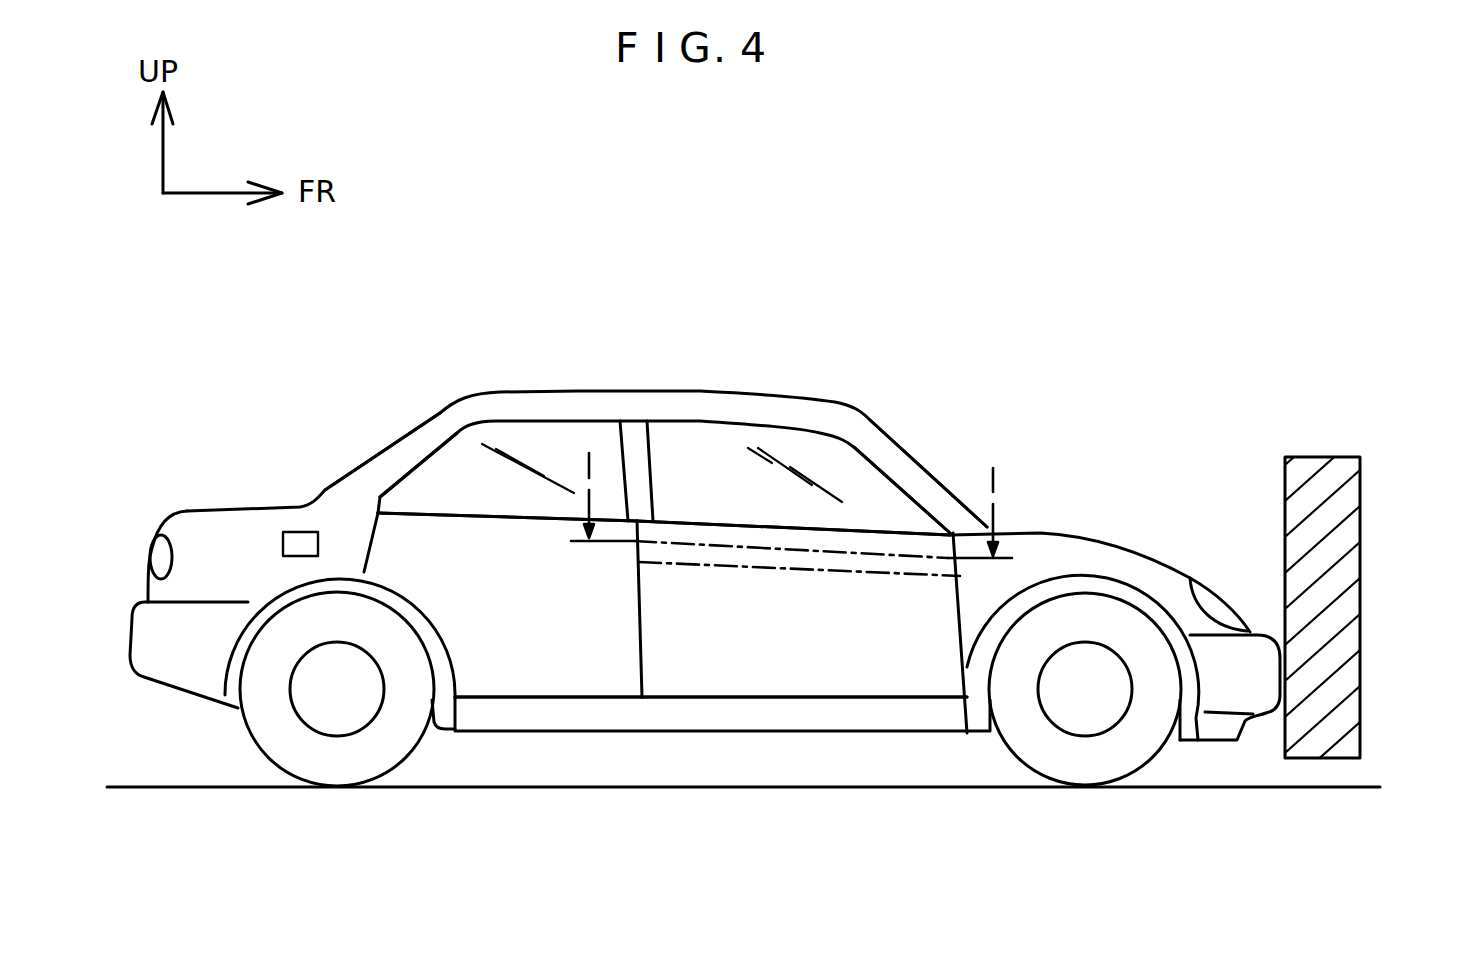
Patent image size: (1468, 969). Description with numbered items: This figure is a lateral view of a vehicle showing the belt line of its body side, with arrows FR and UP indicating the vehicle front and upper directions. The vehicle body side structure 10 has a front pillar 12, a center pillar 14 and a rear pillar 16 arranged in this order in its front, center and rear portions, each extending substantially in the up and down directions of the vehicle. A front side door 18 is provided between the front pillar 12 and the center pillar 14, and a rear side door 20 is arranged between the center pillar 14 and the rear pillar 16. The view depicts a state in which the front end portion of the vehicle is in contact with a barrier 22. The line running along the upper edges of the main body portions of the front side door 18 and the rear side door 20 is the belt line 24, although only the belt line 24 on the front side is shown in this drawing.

The vehicle body side structure 10 is at (721, 670).
The front pillar 12 is at (913, 473).
The center pillar 14 is at (644, 465).
The rear pillar 16 is at (402, 452).
The front side door 18 is at (787, 673).
The rear side door 20 is at (553, 677).
The barrier 22 is at (1362, 536).
The belt line 24 is at (856, 576).